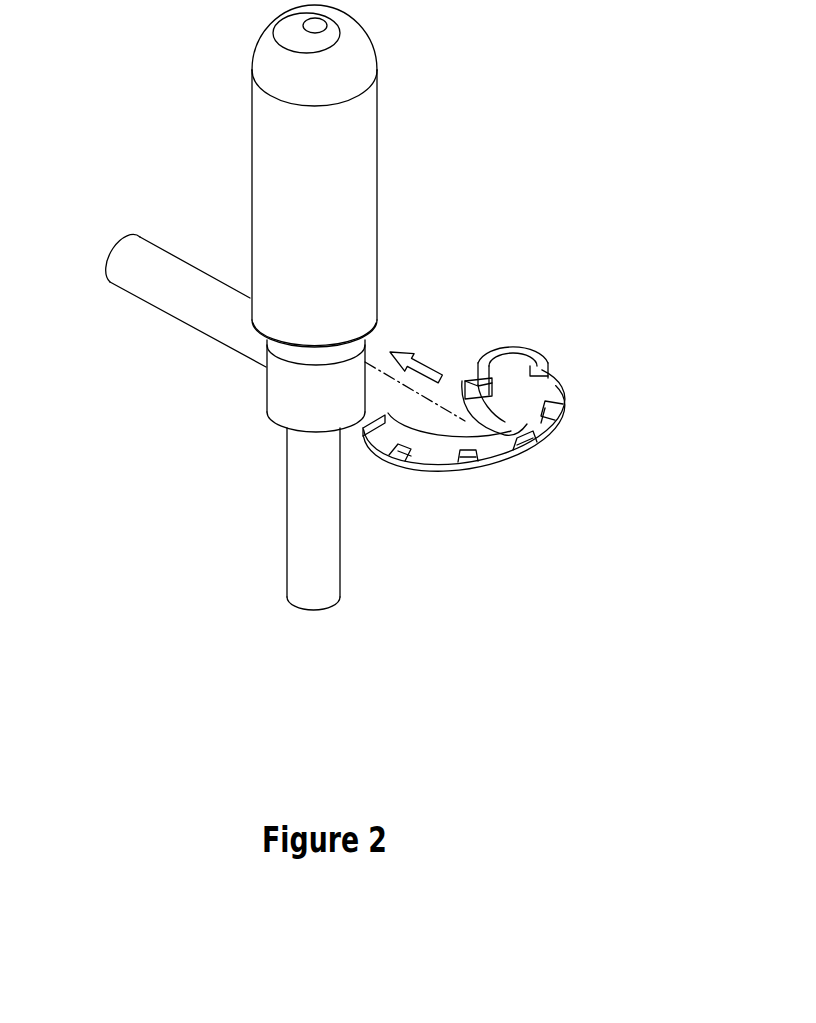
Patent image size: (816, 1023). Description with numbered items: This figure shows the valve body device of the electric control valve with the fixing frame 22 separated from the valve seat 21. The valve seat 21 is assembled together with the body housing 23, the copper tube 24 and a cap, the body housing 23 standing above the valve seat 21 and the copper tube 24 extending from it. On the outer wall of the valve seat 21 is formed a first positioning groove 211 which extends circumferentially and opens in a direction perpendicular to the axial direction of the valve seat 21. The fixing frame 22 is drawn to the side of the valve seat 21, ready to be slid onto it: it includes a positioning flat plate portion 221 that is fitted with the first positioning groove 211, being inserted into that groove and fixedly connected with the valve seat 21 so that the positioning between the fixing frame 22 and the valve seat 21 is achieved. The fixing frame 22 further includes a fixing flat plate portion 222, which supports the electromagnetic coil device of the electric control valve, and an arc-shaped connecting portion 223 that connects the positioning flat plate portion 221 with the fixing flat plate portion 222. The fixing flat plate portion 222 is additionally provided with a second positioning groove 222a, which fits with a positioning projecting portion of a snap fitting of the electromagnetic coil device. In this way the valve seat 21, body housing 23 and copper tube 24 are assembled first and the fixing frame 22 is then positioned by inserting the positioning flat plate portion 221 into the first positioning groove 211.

The valve seat 21 is at (307, 403).
The first positioning groove 211 is at (283, 357).
The fixing frame 22 is at (558, 424).
The positioning flat plate portion 221 is at (487, 388).
The fixing flat plate portion 222 is at (540, 424).
The second positioning groove 222a is at (472, 462).
The arc-shaped connecting portion 223 is at (520, 394).
The body housing 23 is at (345, 170).
The copper tube 24 is at (158, 272).